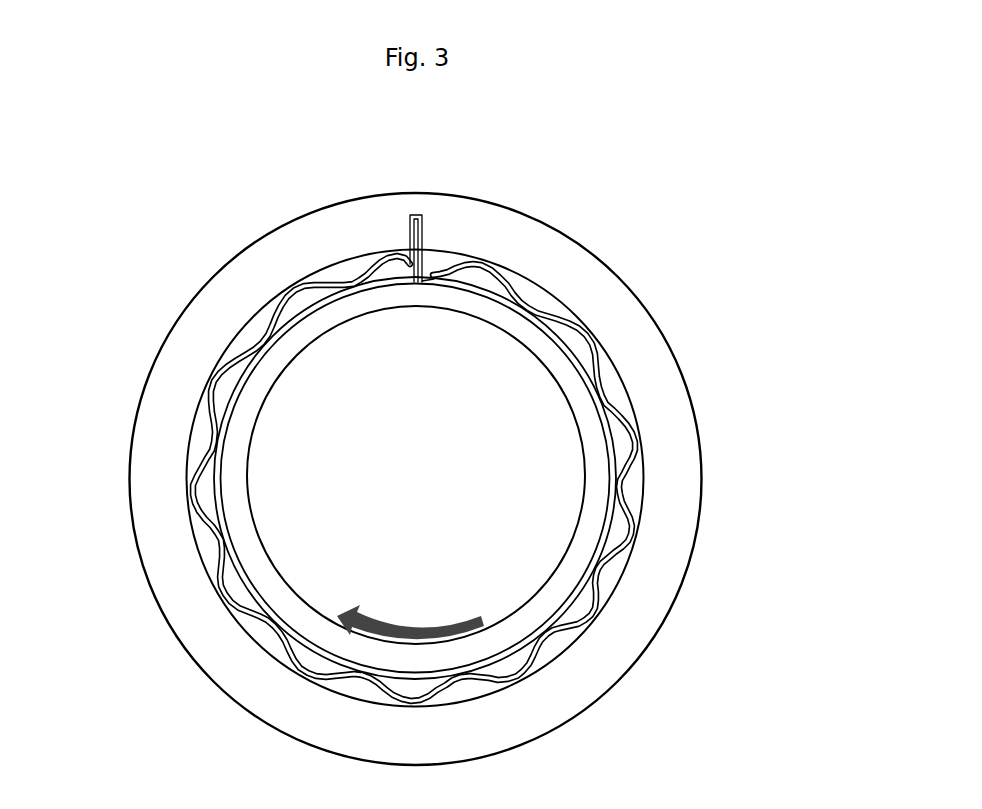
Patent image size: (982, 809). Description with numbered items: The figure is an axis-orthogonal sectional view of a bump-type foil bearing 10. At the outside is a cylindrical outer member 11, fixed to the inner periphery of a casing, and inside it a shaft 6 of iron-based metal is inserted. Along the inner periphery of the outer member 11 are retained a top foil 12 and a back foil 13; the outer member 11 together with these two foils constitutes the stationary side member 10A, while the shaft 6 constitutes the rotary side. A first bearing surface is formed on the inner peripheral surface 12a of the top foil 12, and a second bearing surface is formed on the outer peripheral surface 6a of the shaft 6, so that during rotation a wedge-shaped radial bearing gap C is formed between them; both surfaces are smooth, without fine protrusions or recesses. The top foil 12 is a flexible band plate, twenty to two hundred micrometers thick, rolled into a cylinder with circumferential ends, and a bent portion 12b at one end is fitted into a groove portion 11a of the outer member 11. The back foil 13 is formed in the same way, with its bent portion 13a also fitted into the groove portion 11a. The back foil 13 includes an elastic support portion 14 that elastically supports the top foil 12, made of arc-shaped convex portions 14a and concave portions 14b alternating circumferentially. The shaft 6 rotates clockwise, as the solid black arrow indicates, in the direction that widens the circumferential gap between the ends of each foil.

The foil bearing 10 is at (697, 238).
The stationary side member 10A is at (227, 241).
The outer member 11 is at (147, 481).
The groove portion 11a is at (421, 220).
The top foil 12 is at (590, 348).
The inner peripheral surface 12a is at (600, 415).
The bent portion 12b is at (425, 236).
The back foil 13 is at (623, 571).
The bent portion 13a is at (408, 232).
The elastic support portion 14 is at (266, 656).
The convex portions 14a is at (232, 578).
The concave portions 14b is at (232, 617).
The shaft 6 is at (524, 495).
The outer peripheral surface 6a is at (273, 371).
The radial bearing gap C is at (513, 322).